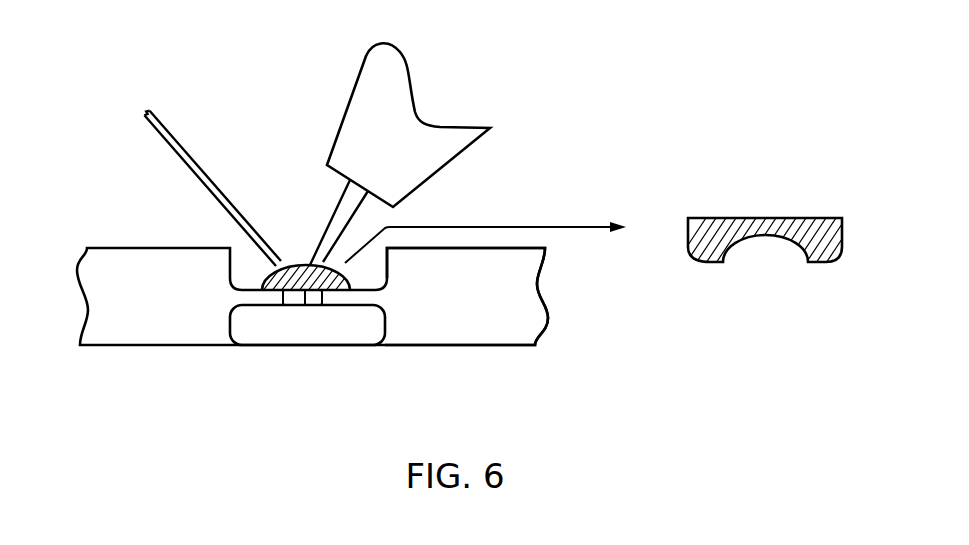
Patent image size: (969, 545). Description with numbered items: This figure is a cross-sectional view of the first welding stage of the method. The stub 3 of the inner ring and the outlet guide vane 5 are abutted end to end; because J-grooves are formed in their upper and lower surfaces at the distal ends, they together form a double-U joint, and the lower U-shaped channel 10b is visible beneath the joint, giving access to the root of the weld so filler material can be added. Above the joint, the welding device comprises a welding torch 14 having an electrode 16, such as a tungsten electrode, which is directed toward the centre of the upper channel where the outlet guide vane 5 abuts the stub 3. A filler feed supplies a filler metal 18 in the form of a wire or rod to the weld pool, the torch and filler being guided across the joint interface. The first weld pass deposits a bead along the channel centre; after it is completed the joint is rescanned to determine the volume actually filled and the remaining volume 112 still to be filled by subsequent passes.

The stub 3 is at (161, 307).
The outlet guide vane 5 is at (419, 309).
The U-shaped channel 10b is at (298, 323).
The welding torch 14 is at (370, 165).
The electrode 16 is at (339, 205).
The filler metal 18 is at (190, 165).
The remaining volume 112 is at (814, 218).